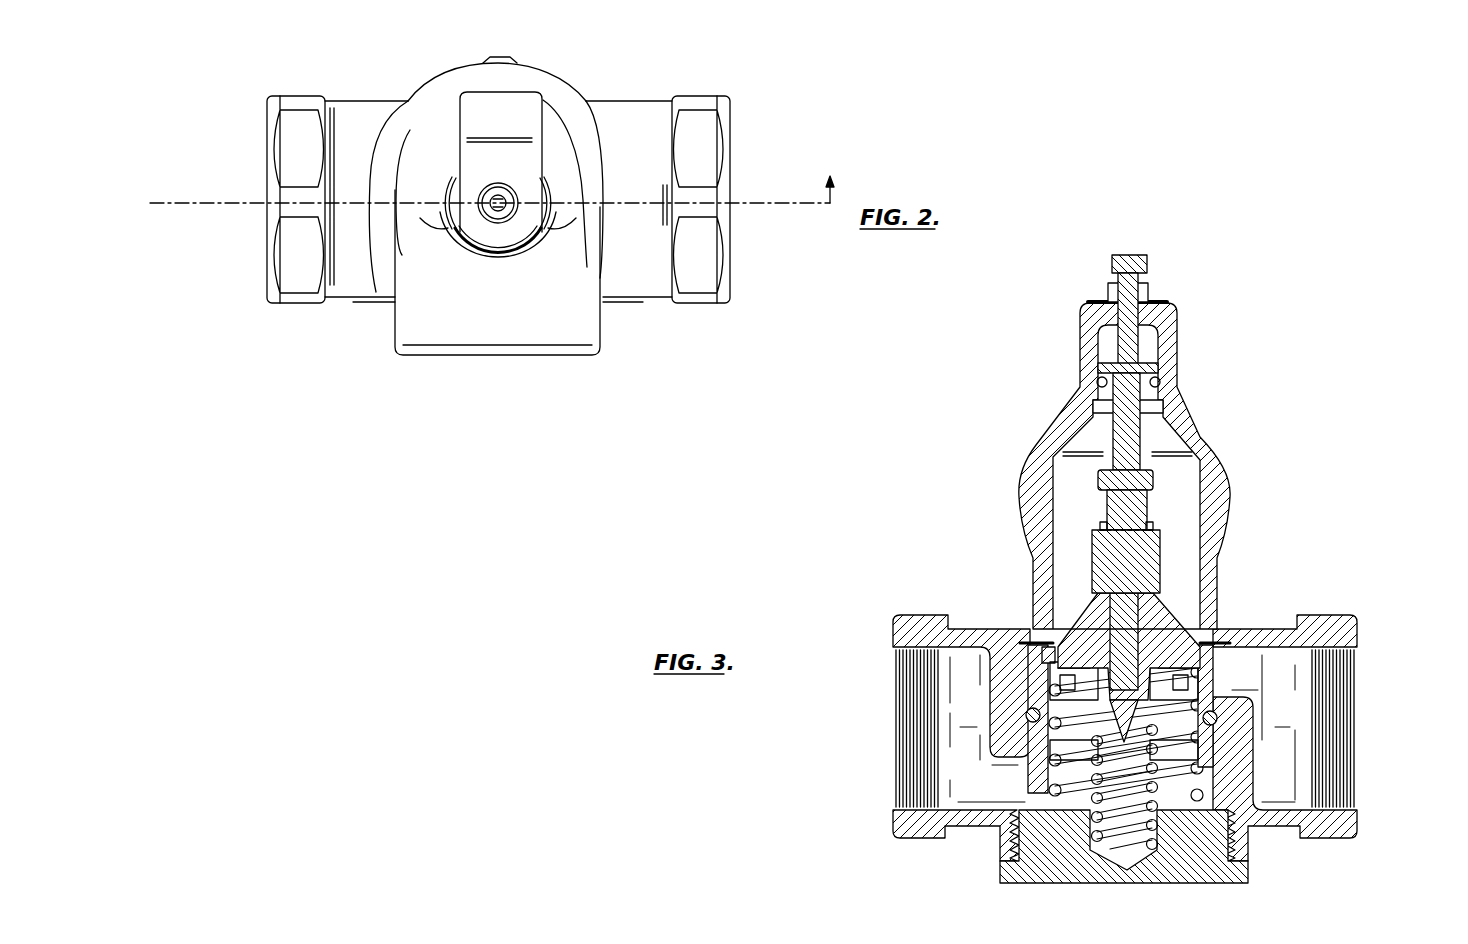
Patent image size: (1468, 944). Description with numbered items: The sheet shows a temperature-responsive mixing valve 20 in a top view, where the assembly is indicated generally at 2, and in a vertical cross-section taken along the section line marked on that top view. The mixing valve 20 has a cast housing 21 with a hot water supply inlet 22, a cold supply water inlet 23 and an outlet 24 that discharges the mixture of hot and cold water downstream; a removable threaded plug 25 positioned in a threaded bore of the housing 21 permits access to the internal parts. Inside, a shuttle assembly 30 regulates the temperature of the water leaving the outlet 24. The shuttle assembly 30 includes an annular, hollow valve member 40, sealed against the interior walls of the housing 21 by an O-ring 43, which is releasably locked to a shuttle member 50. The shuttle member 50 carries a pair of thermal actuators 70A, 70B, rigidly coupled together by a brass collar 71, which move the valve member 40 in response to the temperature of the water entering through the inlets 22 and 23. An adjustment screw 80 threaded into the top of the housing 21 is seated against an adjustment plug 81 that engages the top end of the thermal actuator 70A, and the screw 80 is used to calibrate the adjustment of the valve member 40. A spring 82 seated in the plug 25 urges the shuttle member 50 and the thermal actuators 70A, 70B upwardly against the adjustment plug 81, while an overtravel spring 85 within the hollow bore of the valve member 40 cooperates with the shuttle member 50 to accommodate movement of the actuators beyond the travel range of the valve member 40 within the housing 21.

In FIG. 2, the valve assembly 2 is at (267, 265).
In FIG. 2, the mixing valve 20 is at (316, 334).
In FIG. 3, the mixing valve 20 is at (992, 389).
In FIG. 2, the housing 21 is at (647, 262).
In FIG. 3, the housing 21 is at (1217, 480).
In FIG. 3, the hot water supply inlet 22 is at (905, 713).
In FIG. 2, the cold supply water inlet 23 is at (732, 232).
In FIG. 3, the cold supply water inlet 23 is at (1343, 673).
In FIG. 2, the outlet 24 is at (450, 358).
In FIG. 3, the threaded plug 25 is at (1000, 878).
In FIG. 3, the shuttle assembly 30 is at (1069, 538).
In FIG. 3, the valve member 40 is at (1033, 676).
In FIG. 3, the O-ring 43 is at (1027, 712).
In FIG. 3, the shuttle member 50 is at (1154, 619).
In FIG. 3, the thermal actuator 70A is at (1125, 432).
In FIG. 3, the thermal actuator 70B is at (1130, 570).
In FIG. 3, the brass collar 71 is at (1123, 497).
In FIG. 2, the adjustment screw 80 is at (498, 183).
In FIG. 3, the adjustment screw 80 is at (1130, 262).
In FIG. 3, the adjustment plug 81 is at (1160, 373).
In FIG. 3, the spring 82 is at (1140, 842).
In FIG. 3, the overtravel spring 85 is at (1183, 700).